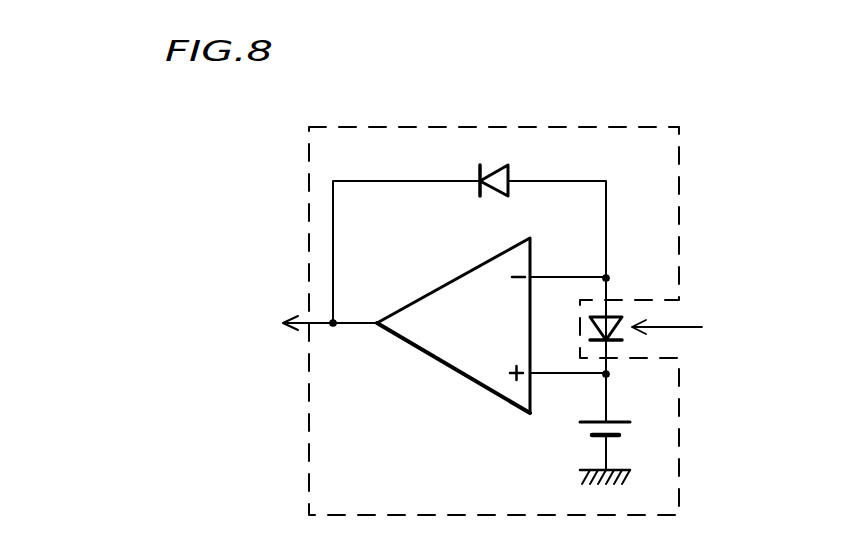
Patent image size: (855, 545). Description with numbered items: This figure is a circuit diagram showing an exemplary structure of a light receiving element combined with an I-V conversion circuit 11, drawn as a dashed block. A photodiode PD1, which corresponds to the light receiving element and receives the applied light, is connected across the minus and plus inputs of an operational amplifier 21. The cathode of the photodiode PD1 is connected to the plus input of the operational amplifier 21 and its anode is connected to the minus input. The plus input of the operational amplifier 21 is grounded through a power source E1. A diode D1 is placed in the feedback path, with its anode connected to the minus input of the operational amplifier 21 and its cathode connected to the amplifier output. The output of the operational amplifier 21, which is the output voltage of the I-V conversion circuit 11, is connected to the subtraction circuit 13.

The I-V conversion circuit 11 is at (309, 157).
The subtraction circuit 13 is at (204, 320).
The operational amplifier 21 is at (470, 383).
The diode D1 is at (512, 171).
The photodiode PD1 is at (624, 338).
The power source E1 is at (585, 432).